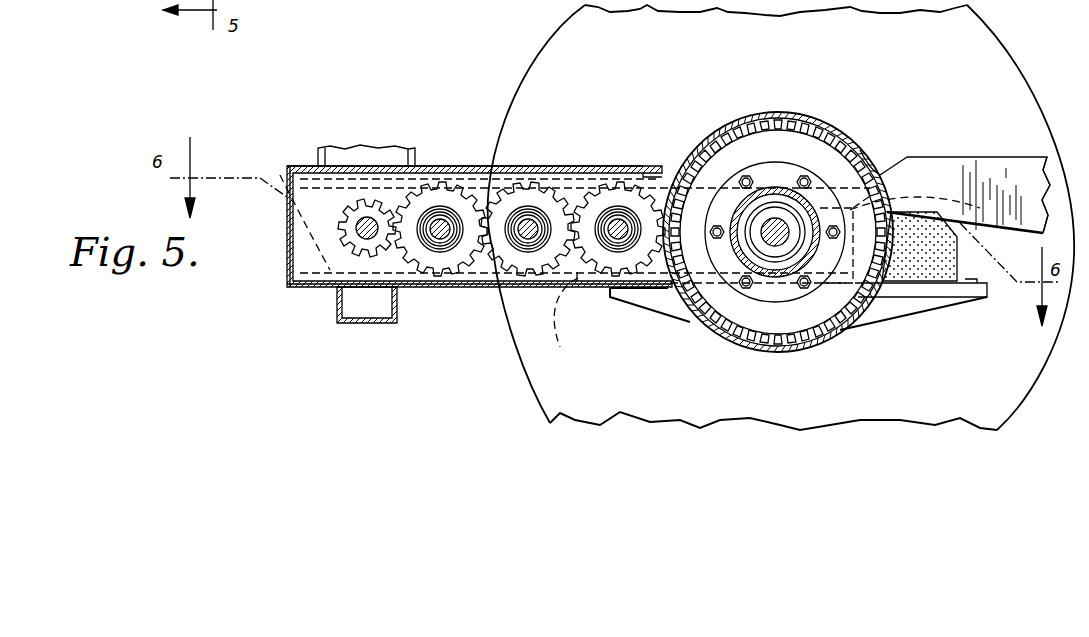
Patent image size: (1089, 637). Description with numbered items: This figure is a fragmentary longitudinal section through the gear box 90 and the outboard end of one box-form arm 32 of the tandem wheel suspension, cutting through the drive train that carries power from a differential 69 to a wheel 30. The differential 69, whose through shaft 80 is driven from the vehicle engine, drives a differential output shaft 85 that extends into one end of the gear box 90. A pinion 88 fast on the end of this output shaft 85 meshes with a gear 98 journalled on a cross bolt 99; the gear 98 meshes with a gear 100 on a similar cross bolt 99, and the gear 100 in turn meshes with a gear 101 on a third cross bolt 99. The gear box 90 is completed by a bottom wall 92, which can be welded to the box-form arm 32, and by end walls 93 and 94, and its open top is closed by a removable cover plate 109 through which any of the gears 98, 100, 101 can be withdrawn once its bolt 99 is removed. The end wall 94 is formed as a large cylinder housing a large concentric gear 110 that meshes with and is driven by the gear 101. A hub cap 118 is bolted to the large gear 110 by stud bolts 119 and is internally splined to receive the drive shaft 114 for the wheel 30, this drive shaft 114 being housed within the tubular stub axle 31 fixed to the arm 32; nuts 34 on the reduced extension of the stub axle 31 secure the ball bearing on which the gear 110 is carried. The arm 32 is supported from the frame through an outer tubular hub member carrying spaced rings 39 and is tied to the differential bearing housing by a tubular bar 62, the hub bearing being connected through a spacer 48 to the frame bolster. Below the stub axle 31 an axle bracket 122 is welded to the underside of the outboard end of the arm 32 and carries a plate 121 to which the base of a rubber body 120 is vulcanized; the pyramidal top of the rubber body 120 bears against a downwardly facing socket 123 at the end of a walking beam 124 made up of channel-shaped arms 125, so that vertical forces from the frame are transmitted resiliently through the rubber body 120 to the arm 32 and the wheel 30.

The wheel 30 is at (1016, 50).
The tubular stub axle 31 is at (826, 200).
The arm 32 is at (571, 320).
The nuts 34 is at (728, 208).
The rings 39 is at (282, 186).
The spacer 48 is at (375, 155).
The tubular bar 62 is at (372, 323).
The differential 69 is at (359, 2).
The through shaft 80 is at (432, 0).
The differential output shaft 85 is at (357, 233).
The pinion 88 is at (340, 254).
The gear box 90 is at (299, 293).
The bottom wall 92 is at (322, 289).
The end wall 93 is at (290, 220).
The end wall 94 is at (882, 170).
The gear 98 is at (458, 192).
The cross bolt 99 is at (440, 240).
The gear 100 is at (540, 185).
The gear 101 is at (630, 198).
The cover plate 109 is at (586, 165).
The large concentric gear 110 is at (828, 130).
The drive shaft 114 is at (777, 246).
The hub cap 118 is at (772, 163).
The stud bolts 119 is at (746, 174).
The rubber body 120 is at (912, 280).
The plate 121 is at (978, 300).
The axle bracket 122 is at (883, 300).
The socket 123 is at (947, 205).
The walking beam 124 is at (1036, 155).
The channel-shaped arms 125 is at (1014, 162).